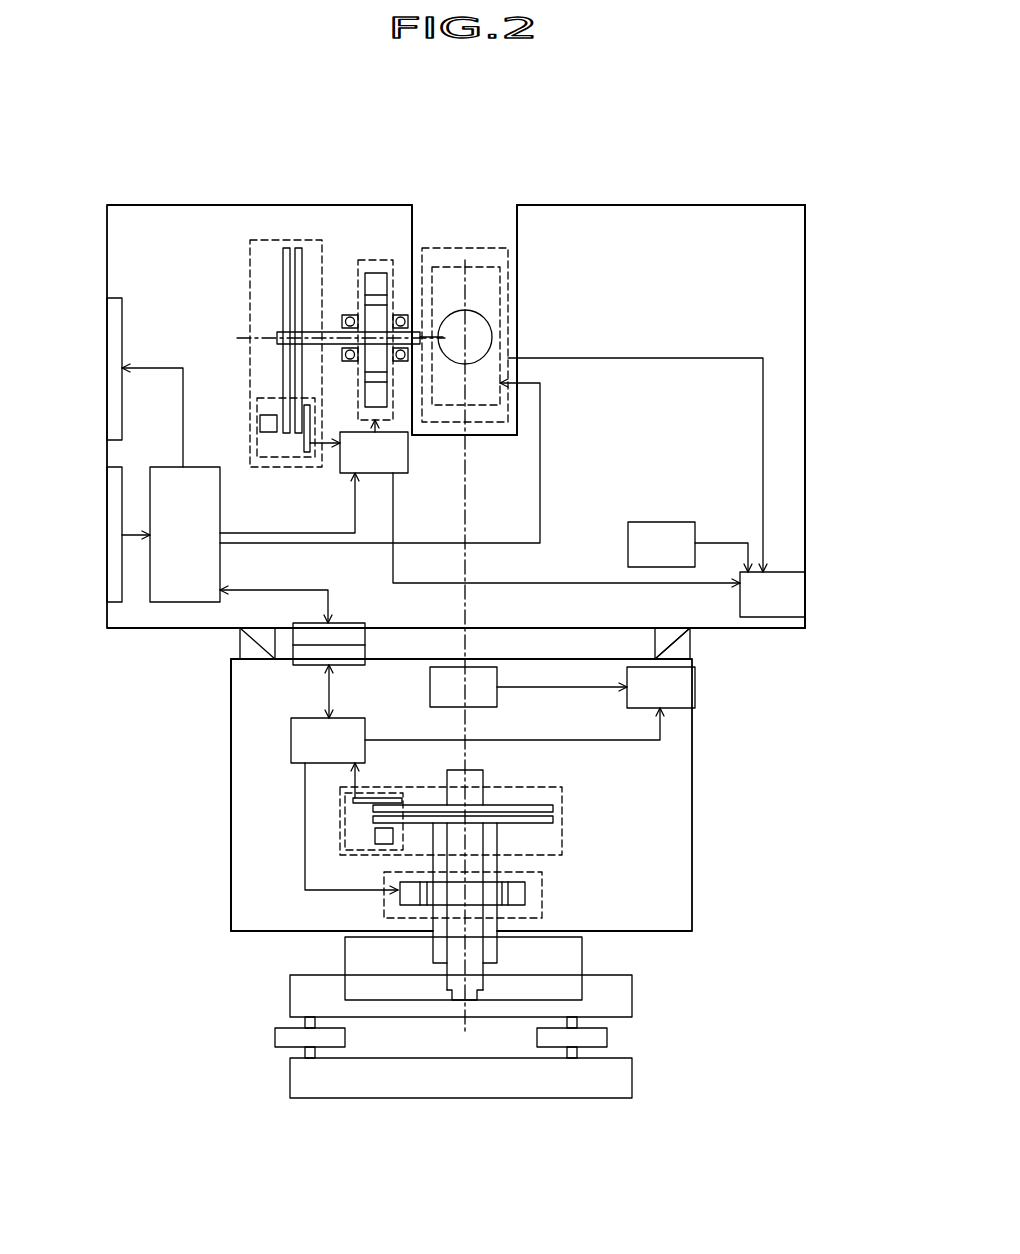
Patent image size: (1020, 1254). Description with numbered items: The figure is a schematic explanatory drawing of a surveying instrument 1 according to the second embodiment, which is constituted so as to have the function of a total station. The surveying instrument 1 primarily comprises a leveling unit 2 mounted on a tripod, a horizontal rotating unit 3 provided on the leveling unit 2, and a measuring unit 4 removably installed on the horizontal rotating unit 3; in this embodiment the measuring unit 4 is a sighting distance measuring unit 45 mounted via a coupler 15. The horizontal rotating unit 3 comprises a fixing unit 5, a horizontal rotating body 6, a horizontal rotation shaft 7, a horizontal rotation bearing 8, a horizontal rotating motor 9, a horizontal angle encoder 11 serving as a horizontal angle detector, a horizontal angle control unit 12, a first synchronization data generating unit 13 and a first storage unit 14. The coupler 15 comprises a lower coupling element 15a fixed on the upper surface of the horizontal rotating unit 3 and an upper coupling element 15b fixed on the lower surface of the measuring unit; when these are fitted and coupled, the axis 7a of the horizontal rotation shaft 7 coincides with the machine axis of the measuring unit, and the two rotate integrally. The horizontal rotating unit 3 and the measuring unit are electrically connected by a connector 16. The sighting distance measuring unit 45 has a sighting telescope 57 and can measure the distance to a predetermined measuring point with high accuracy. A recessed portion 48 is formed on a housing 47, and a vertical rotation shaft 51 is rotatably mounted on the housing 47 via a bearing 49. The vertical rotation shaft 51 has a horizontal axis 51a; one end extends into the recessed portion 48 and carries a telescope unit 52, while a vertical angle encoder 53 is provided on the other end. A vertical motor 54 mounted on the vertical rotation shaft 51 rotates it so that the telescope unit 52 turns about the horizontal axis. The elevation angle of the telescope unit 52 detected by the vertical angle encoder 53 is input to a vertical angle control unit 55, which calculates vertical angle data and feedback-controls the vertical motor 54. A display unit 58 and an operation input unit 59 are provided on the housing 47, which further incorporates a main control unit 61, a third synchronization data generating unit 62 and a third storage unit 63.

The surveying instrument 1 is at (321, 150).
The leveling unit 2 is at (632, 995).
The horizontal rotating unit 3 is at (697, 803).
The measuring unit 4 is at (628, 205).
The sighting distance measuring unit 45 is at (661, 377).
The fixing unit 5 is at (582, 950).
The horizontal rotating body 6 is at (231, 870).
The horizontal rotation shaft 7 is at (483, 797).
The axis 7a is at (467, 835).
The horizontal rotation bearing 8 is at (497, 953).
The horizontal rotating motor 9 is at (540, 892).
The horizontal angle encoder 11 is at (562, 818).
The horizontal angle control unit 12 is at (291, 743).
The first synchronization data generating unit 13 is at (430, 686).
The first storage unit 14 is at (695, 708).
The coupler 15 is at (232, 645).
The lower coupling element 15a is at (692, 645).
The upper coupling element 15b is at (653, 642).
The connector 16 is at (375, 647).
The housing 47 is at (737, 205).
The recessed portion 48 is at (498, 222).
The bearing 49 is at (344, 312).
The vertical rotation shaft 51 is at (330, 346).
The horizontal axis 51a is at (268, 338).
The telescope unit 52 is at (458, 248).
The vertical angle encoder 53 is at (278, 240).
The vertical motor 54 is at (380, 260).
The vertical angle control unit 55 is at (408, 455).
The sighting telescope 57 is at (488, 315).
The display unit 58 is at (107, 363).
The operation input unit 59 is at (107, 555).
The main control unit 61 is at (198, 467).
The third synchronization data generating unit 62 is at (660, 522).
The third storage unit 63 is at (790, 572).